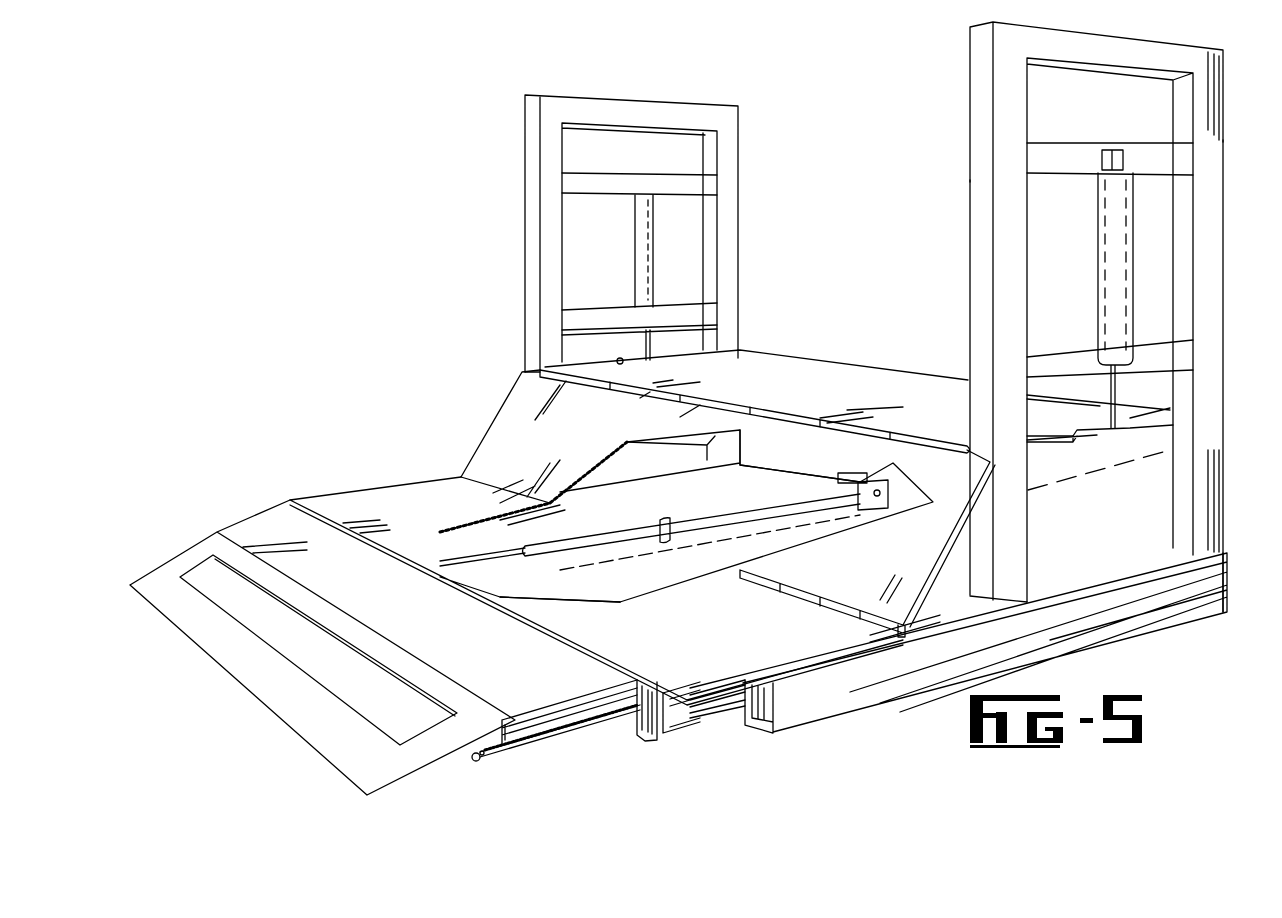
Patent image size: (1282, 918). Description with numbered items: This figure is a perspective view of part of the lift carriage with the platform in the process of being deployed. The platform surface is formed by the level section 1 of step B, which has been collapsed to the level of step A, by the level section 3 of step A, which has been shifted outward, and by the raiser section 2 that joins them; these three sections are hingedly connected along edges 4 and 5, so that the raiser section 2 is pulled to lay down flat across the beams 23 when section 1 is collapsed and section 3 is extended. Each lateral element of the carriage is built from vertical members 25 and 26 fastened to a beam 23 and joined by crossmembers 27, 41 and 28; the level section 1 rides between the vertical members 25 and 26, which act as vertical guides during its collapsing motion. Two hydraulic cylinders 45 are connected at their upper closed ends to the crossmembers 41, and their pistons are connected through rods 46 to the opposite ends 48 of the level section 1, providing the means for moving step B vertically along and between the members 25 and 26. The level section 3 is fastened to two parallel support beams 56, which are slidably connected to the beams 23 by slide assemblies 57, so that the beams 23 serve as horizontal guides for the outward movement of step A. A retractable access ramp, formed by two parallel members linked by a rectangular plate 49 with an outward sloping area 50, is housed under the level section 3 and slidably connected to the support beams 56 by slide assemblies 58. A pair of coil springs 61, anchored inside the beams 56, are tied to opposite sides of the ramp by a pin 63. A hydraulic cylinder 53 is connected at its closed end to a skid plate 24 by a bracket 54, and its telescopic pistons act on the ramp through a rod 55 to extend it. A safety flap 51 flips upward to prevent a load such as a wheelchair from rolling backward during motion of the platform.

The level section 1 is at (838, 366).
The raiser section 2 is at (488, 434).
The level section 3 is at (403, 486).
The edge 4 is at (733, 404).
The edge 5 is at (493, 490).
The beam 23 is at (1233, 576).
The skid plate 24 is at (798, 480).
The vertical member 25 is at (525, 178).
The vertical member 26 is at (738, 172).
The crossmember 27 is at (650, 104).
The crossmember 28 is at (623, 308).
The crossmember 41 is at (648, 174).
The hydraulic cylinder 45 is at (634, 260).
The rod 46 is at (1108, 426).
The end of level section 48 is at (1114, 438).
The rectangular plate 49 is at (530, 585).
The sloping front section 50 is at (190, 556).
The safety flap 51 is at (263, 642).
The hydraulic cylinder 53 is at (685, 518).
The bracket 54 is at (870, 508).
The rod 55 is at (503, 558).
The support beam 56 is at (644, 733).
The slide assembly 57 is at (704, 717).
The slide assembly 58 is at (568, 710).
The coil spring 61 is at (505, 766).
The pin 63 is at (480, 766).